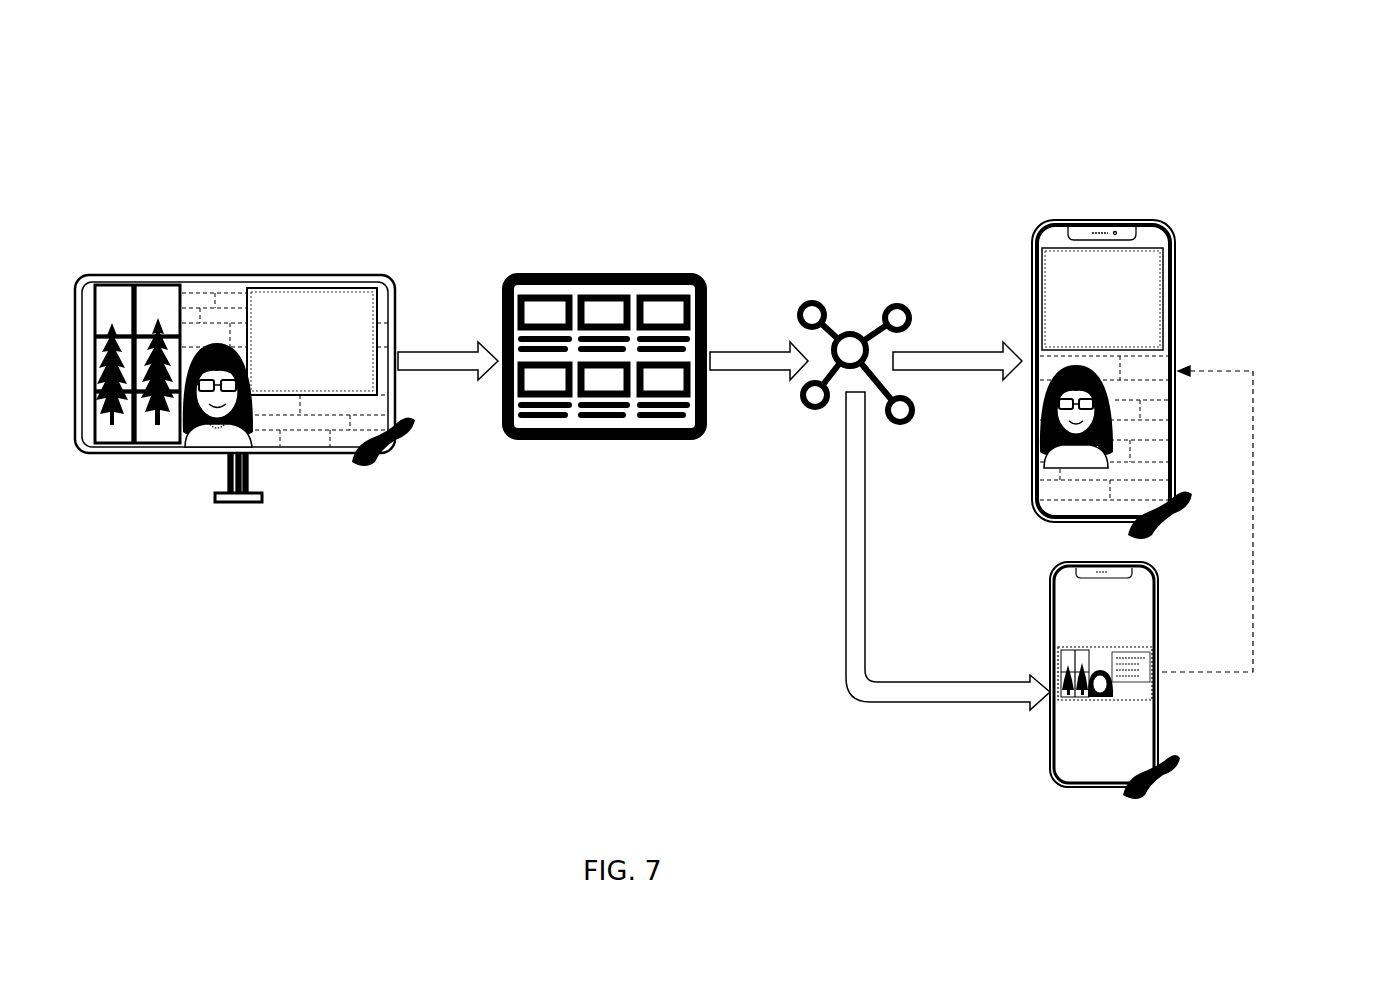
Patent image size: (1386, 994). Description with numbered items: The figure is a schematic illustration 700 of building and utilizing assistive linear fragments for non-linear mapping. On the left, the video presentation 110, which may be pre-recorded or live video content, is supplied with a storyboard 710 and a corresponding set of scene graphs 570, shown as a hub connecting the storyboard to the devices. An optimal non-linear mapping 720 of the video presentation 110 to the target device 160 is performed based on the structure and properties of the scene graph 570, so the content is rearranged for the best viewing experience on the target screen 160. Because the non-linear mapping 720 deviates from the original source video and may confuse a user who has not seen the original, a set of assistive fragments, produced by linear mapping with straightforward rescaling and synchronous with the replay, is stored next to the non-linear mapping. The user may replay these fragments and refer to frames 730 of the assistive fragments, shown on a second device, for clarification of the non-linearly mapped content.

The schematic illustration 700 is at (1382, 128).
The video presentation 110 is at (128, 314).
The storyboard 710 is at (583, 274).
The scene graph 570 is at (850, 333).
The target device 160 is at (1032, 325).
The non-linear mapping 720 is at (1156, 403).
The frames of the assistive fragments 730 is at (1068, 648).